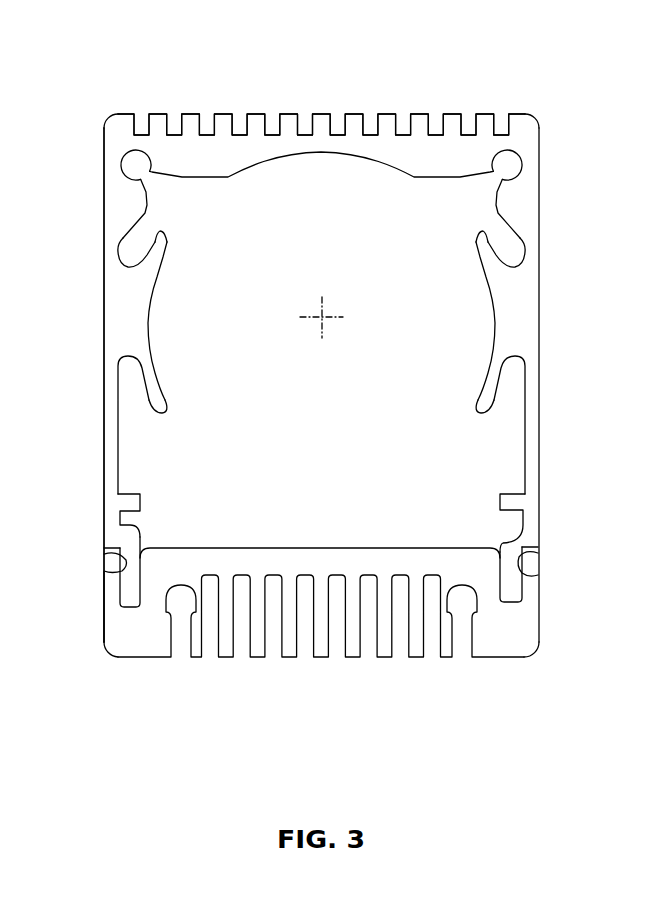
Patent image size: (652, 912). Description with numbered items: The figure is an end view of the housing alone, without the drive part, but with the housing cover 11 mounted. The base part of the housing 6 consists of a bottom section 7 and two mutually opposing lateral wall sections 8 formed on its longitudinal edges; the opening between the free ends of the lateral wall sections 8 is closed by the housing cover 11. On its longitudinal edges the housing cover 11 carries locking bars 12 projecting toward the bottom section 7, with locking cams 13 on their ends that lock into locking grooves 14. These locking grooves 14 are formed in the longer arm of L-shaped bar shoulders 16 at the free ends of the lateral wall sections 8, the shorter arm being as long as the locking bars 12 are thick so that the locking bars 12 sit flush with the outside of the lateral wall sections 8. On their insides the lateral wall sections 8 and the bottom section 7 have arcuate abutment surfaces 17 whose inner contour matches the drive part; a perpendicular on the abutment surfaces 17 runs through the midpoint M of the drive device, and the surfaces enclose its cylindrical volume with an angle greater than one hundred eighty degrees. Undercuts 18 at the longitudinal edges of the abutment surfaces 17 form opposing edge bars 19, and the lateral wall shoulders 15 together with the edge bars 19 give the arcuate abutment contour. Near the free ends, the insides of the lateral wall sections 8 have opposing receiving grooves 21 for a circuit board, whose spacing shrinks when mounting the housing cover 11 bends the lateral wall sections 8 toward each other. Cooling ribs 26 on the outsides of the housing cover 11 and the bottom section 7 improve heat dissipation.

The base part of the housing 6 is at (112, 282).
The bottom section 7 is at (188, 150).
The lateral wall sections 8 is at (104, 383).
The housing cover 11 is at (292, 552).
The locking bars 12 is at (110, 583).
The locking cams 13 is at (108, 565).
The locking grooves 14 is at (139, 553).
The lateral wall shoulders 15 is at (125, 342).
The bar shoulders 16 is at (505, 568).
The abutment surfaces 17 is at (320, 153).
The undercuts 18 is at (132, 250).
The edge bars 19 is at (157, 233).
The receiving grooves 21 is at (125, 508).
The cooling ribs 26 is at (257, 122).
The midpoint of the drive device M is at (322, 317).